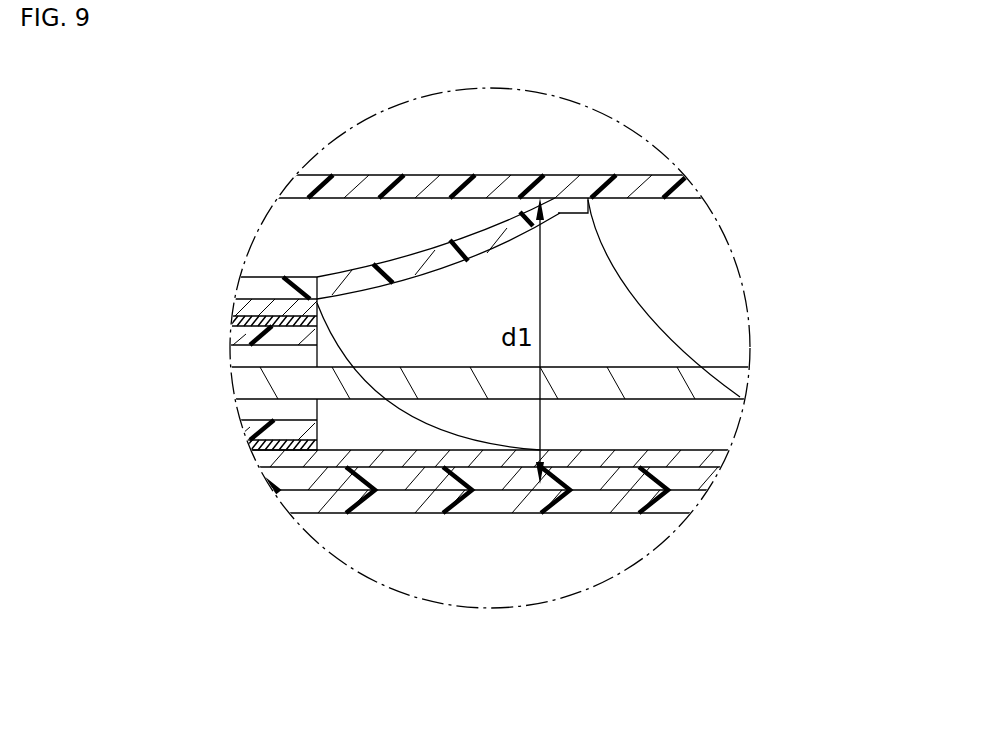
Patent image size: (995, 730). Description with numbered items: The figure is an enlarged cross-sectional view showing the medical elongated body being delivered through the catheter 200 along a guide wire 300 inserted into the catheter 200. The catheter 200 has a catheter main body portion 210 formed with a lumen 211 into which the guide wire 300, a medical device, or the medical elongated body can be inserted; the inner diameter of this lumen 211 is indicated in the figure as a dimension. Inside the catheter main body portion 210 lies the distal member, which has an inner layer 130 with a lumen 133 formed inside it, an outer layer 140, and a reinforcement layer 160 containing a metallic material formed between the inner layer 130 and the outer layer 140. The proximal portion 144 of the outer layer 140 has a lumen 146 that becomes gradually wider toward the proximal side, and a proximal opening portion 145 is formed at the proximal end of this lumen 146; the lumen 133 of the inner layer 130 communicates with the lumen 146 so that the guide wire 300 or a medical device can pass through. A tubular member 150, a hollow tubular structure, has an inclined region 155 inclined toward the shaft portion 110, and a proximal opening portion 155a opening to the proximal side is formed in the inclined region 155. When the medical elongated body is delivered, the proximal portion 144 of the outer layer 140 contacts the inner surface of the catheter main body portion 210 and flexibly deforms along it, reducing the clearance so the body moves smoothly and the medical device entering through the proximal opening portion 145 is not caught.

The catheter 200 is at (385, 170).
The catheter main body portion 210 is at (408, 188).
The lumen 211 is at (425, 220).
The outer layer 140 is at (282, 285).
The proximal portion 144 is at (573, 208).
The proximal opening portion 145 is at (620, 272).
The lumen 146 is at (585, 320).
The reinforcement layer 160 is at (262, 318).
The lumen 133 is at (262, 422).
The guide wire 300 is at (657, 392).
The inner layer 130 is at (265, 445).
The tubular member 150 is at (312, 452).
The proximal opening portion 155a is at (460, 436).
The inclined region 155 is at (388, 430).
The shaft portion 110 is at (655, 450).